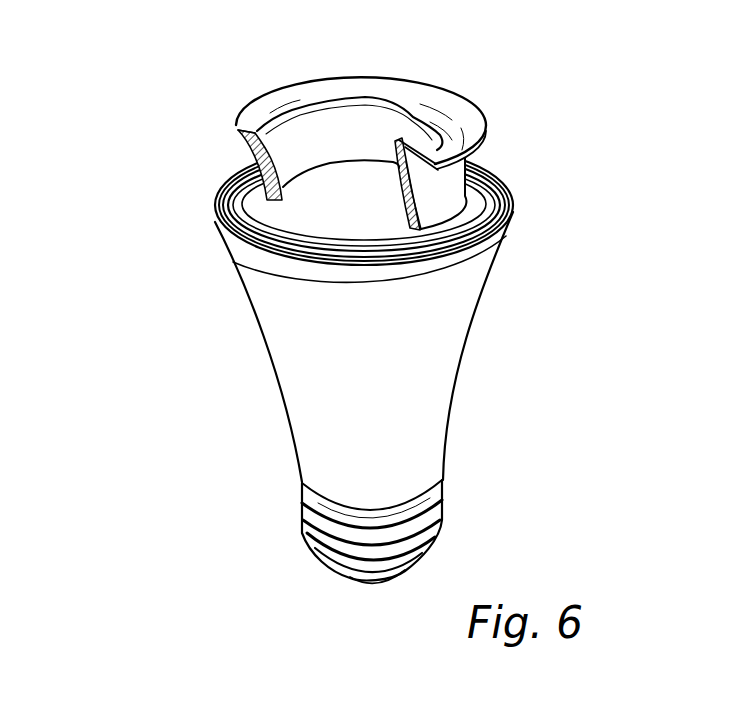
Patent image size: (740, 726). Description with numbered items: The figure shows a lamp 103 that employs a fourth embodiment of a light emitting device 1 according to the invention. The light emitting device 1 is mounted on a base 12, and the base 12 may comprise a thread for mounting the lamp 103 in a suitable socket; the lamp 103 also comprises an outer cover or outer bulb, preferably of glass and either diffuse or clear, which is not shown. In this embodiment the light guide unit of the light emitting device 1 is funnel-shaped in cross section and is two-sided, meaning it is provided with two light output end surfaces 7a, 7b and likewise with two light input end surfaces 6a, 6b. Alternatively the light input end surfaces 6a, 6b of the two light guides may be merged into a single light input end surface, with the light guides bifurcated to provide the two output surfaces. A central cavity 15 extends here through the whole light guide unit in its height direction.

The light emitting device 1 is at (347, 138).
The light input end surface 6a is at (413, 222).
The light input end surface 6b is at (372, 240).
The light output end surface 7a is at (237, 135).
The light output end surface 7b is at (326, 117).
The base 12 is at (378, 364).
The central cavity 15 is at (356, 176).
The lamp 103 is at (326, 305).